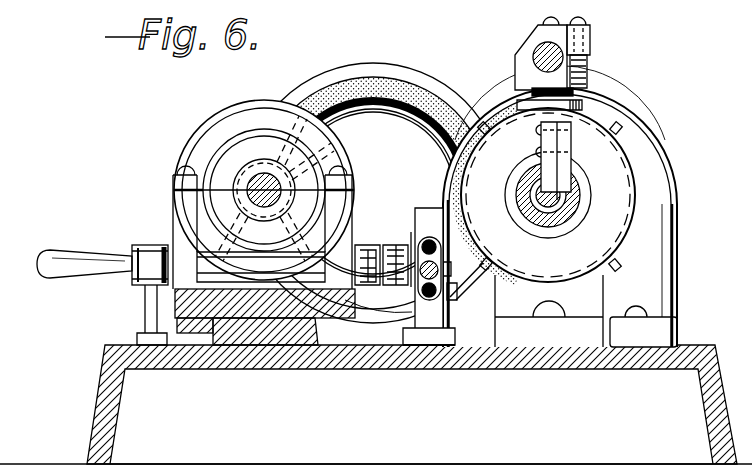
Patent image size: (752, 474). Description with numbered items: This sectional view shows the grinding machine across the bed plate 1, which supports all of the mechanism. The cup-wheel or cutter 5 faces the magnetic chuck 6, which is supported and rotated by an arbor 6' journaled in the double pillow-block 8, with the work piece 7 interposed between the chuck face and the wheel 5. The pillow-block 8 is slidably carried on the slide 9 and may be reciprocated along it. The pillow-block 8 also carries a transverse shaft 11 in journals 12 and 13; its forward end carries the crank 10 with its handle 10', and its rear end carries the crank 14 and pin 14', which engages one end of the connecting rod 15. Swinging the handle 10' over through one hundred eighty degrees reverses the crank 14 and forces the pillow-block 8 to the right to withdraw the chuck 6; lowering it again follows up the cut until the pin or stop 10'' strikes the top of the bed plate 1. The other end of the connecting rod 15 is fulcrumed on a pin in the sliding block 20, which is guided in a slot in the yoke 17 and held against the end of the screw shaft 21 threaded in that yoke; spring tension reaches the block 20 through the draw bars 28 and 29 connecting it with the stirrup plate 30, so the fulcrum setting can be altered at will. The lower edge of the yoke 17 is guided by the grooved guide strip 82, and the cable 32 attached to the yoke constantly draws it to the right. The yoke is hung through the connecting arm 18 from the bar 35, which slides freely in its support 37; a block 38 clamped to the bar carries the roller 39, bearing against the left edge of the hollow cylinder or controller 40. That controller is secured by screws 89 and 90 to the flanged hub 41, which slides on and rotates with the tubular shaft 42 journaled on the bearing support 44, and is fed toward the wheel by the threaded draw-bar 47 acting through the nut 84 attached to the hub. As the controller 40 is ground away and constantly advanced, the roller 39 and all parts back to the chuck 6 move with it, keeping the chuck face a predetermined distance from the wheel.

The bed plate 1 is at (566, 383).
The cup-wheel or cutter 5 is at (380, 80).
The magnetic chuck 6 is at (258, 190).
The arbor 6' is at (261, 182).
The work piece 7 is at (324, 160).
The double pillow-block 8 is at (174, 358).
The slide 9 is at (225, 370).
The crank 10 is at (130, 273).
The handle 10' is at (77, 251).
The pin or stop 10'' is at (127, 315).
The transverse shaft 11 is at (301, 232).
The journal 12 is at (176, 247).
The journal 13 is at (337, 246).
The crank 14 is at (378, 315).
The pin 14' is at (372, 250).
The connecting rod 15 is at (405, 243).
The yoke 17 is at (427, 175).
The connecting arm 18 is at (597, 42).
The sliding block 20 is at (543, 195).
The screw shaft 21 is at (458, 283).
The draw bar 28 is at (429, 240).
The draw bar 29 is at (429, 276).
The stirrup plate 30 is at (452, 262).
The cable 32 is at (452, 296).
The bar 35 is at (550, 20).
The support 37 is at (660, 130).
The block 38 is at (522, 35).
The roller 39 is at (590, 98).
The hollow cylinder or controller 40 is at (636, 163).
The flanged hub 41 is at (660, 238).
The tubular shaft 42 is at (580, 205).
The bearing support 44 is at (586, 311).
The threaded draw-bar 47 is at (562, 225).
The grooved guide strip 82 is at (437, 347).
The nut 84 is at (566, 186).
The screw 89 is at (485, 122).
The screw 90 is at (494, 264).